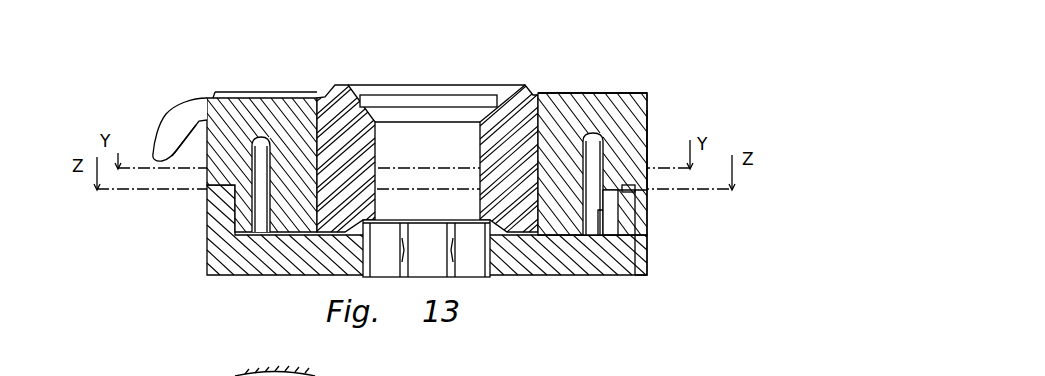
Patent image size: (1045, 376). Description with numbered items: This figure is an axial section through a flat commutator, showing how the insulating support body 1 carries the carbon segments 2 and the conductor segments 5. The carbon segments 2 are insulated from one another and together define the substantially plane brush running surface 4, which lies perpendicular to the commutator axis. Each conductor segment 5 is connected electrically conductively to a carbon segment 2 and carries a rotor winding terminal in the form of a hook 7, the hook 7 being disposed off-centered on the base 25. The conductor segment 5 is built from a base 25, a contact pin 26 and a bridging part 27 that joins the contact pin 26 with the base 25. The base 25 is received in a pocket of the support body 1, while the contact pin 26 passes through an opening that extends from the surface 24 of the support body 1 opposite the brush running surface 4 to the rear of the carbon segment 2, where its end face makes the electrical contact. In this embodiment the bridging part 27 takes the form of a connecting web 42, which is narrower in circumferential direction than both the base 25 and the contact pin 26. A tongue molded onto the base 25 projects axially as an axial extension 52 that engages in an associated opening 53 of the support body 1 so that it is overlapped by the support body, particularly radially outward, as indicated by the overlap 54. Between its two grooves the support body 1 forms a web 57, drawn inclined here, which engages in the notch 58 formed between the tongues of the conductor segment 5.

The support body 1 is at (332, 120).
The carbon segments 2 is at (611, 265).
The brush running surface 4 is at (258, 282).
The conductor segments 5 is at (652, 102).
The hook 7 is at (163, 140).
The surface of support body 24 is at (553, 95).
The base 25 is at (640, 150).
The contact pin 26 is at (568, 212).
The bridging part 27 is at (599, 92).
The connecting web 42 is at (600, 114).
The axial extension 52 is at (649, 221).
The opening 53 is at (650, 240).
The overlap 54 is at (648, 204).
The web 57 is at (206, 130).
The notch 58 is at (258, 135).